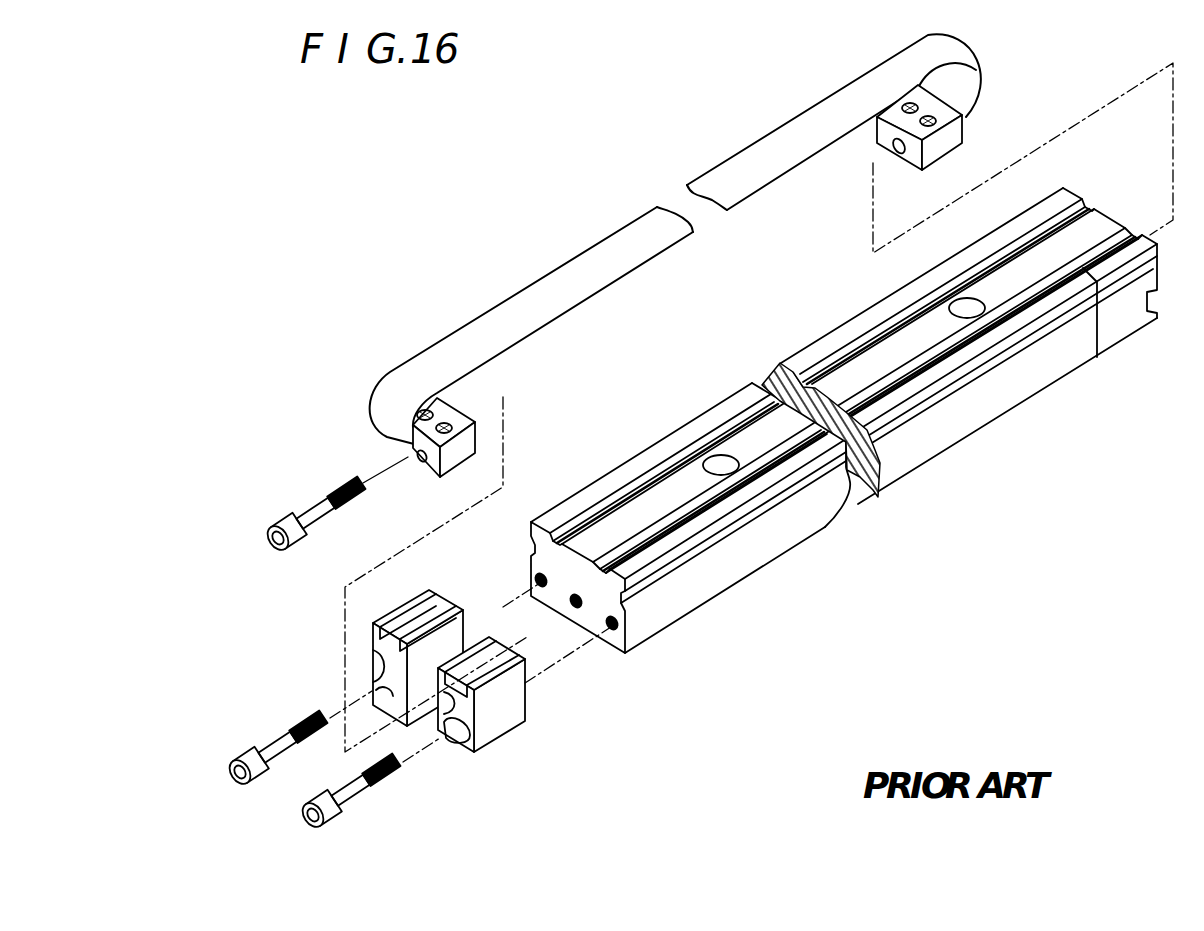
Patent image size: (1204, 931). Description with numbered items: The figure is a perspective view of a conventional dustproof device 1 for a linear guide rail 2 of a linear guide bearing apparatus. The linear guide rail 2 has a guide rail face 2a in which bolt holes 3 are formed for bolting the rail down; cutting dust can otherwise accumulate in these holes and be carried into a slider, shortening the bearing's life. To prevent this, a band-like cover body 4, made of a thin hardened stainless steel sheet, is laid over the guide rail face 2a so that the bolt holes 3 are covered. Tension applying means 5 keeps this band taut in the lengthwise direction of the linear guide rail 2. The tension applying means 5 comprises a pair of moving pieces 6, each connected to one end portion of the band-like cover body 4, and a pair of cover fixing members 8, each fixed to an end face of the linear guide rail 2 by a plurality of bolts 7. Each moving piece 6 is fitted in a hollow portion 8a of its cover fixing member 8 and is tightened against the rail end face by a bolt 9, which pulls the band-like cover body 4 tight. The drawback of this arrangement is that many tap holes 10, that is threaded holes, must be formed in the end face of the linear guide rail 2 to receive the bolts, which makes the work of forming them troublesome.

The dustproof device 1 is at (586, 167).
The linear guide rail 2 is at (766, 503).
The guide rail face 2a is at (653, 507).
The bolt holes 3 is at (720, 460).
The band-like cover body 4 is at (582, 262).
The tension applying means 5 is at (317, 641).
The moving piece 6 is at (950, 143).
The bolts 7 is at (270, 748).
The cover fixing member 8 is at (1127, 335).
The hollow portion 8a is at (430, 711).
The bolt 9 is at (308, 506).
The tap holes 10 is at (612, 632).